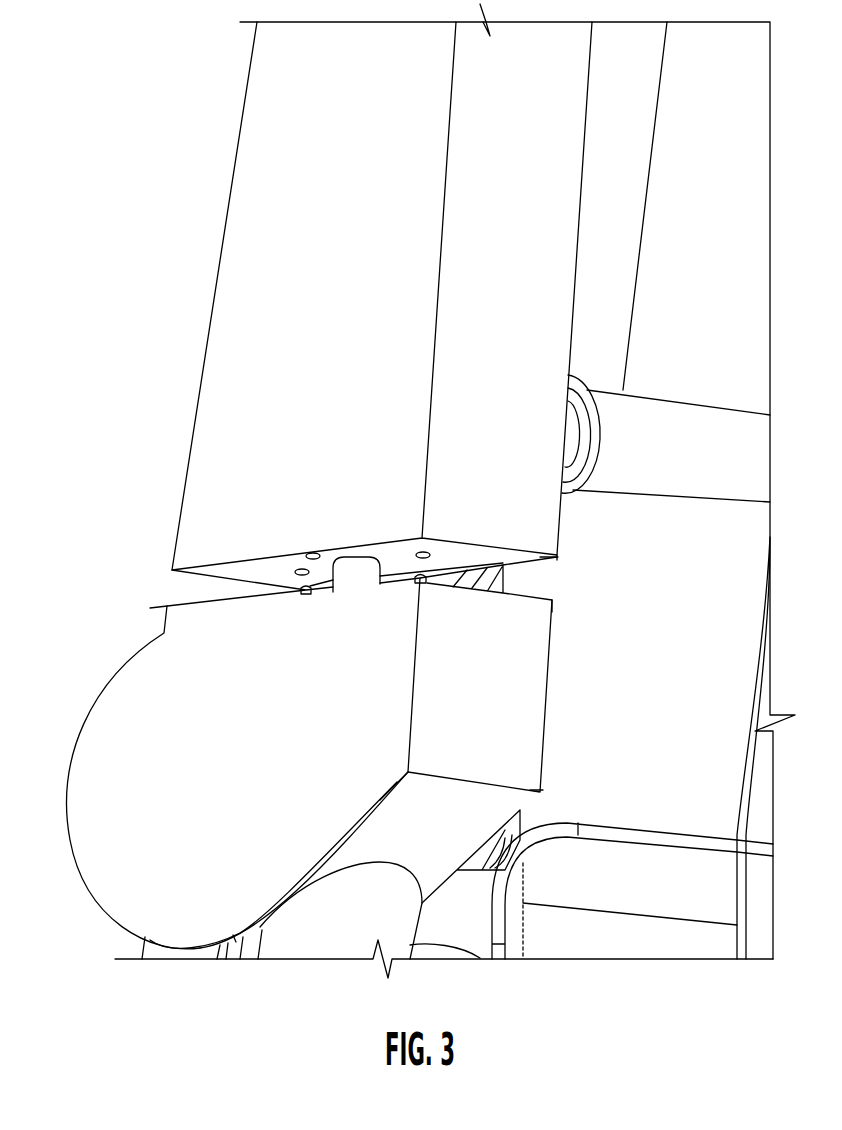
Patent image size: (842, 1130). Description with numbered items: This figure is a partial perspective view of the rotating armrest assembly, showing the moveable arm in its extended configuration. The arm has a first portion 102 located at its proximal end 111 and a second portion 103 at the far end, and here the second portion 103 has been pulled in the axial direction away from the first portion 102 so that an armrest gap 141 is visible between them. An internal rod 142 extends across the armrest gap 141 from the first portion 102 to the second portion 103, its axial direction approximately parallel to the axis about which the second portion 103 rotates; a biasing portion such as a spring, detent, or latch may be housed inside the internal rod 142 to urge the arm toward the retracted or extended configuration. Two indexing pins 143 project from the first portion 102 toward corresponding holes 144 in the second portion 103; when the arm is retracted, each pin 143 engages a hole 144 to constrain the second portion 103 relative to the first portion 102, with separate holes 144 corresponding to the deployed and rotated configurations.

The first portion 102 is at (118, 855).
The second portion 103 is at (278, 98).
The proximal end 111 is at (95, 750).
The armrest gap 141 is at (190, 597).
The internal rod 142 is at (358, 575).
The indexing pin 143 is at (306, 596).
The hole 144 is at (300, 568).